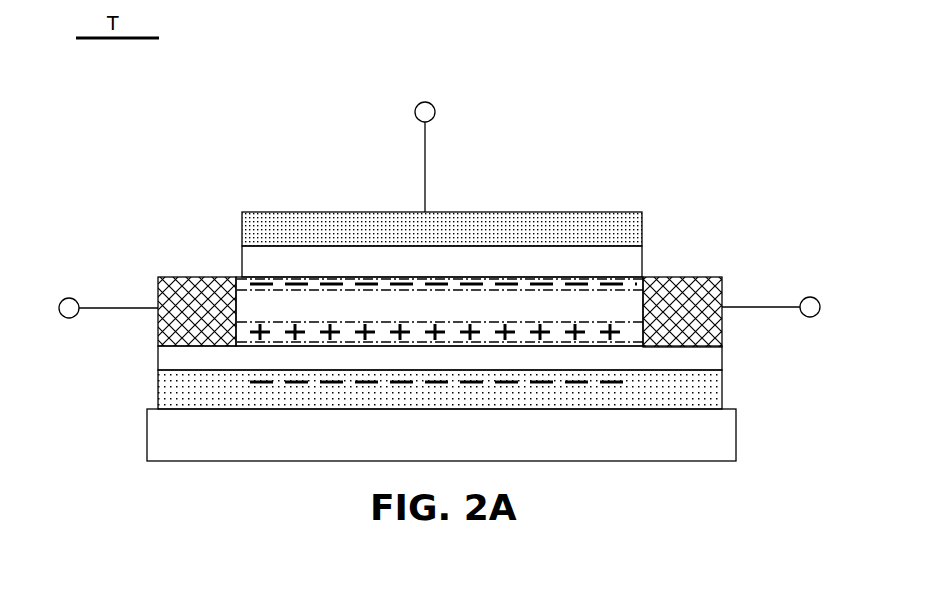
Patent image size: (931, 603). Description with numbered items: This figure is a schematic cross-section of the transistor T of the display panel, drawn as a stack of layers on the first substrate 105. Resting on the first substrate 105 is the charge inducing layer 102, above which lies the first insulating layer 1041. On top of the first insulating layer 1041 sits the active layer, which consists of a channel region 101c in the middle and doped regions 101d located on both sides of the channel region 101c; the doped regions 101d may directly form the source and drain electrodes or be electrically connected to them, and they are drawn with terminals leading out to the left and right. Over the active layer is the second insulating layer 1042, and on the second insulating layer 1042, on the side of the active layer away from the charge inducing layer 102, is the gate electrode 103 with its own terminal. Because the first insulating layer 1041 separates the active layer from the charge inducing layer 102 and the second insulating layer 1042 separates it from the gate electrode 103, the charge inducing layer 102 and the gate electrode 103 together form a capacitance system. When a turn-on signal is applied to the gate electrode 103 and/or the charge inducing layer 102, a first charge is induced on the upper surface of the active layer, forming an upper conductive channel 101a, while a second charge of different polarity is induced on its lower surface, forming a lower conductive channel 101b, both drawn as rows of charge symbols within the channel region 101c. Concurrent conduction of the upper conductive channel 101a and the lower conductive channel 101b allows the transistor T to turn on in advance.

The upper conductive channel 101a is at (488, 285).
The lower conductive channel 101b is at (550, 327).
The channel region 101c is at (608, 302).
The doped regions 101d is at (703, 320).
The charge inducing layer 102 is at (172, 387).
The gate electrode 103 is at (273, 225).
The first insulating layer 1041 is at (183, 357).
The second insulating layer 1042 is at (252, 258).
The first substrate 105 is at (168, 433).